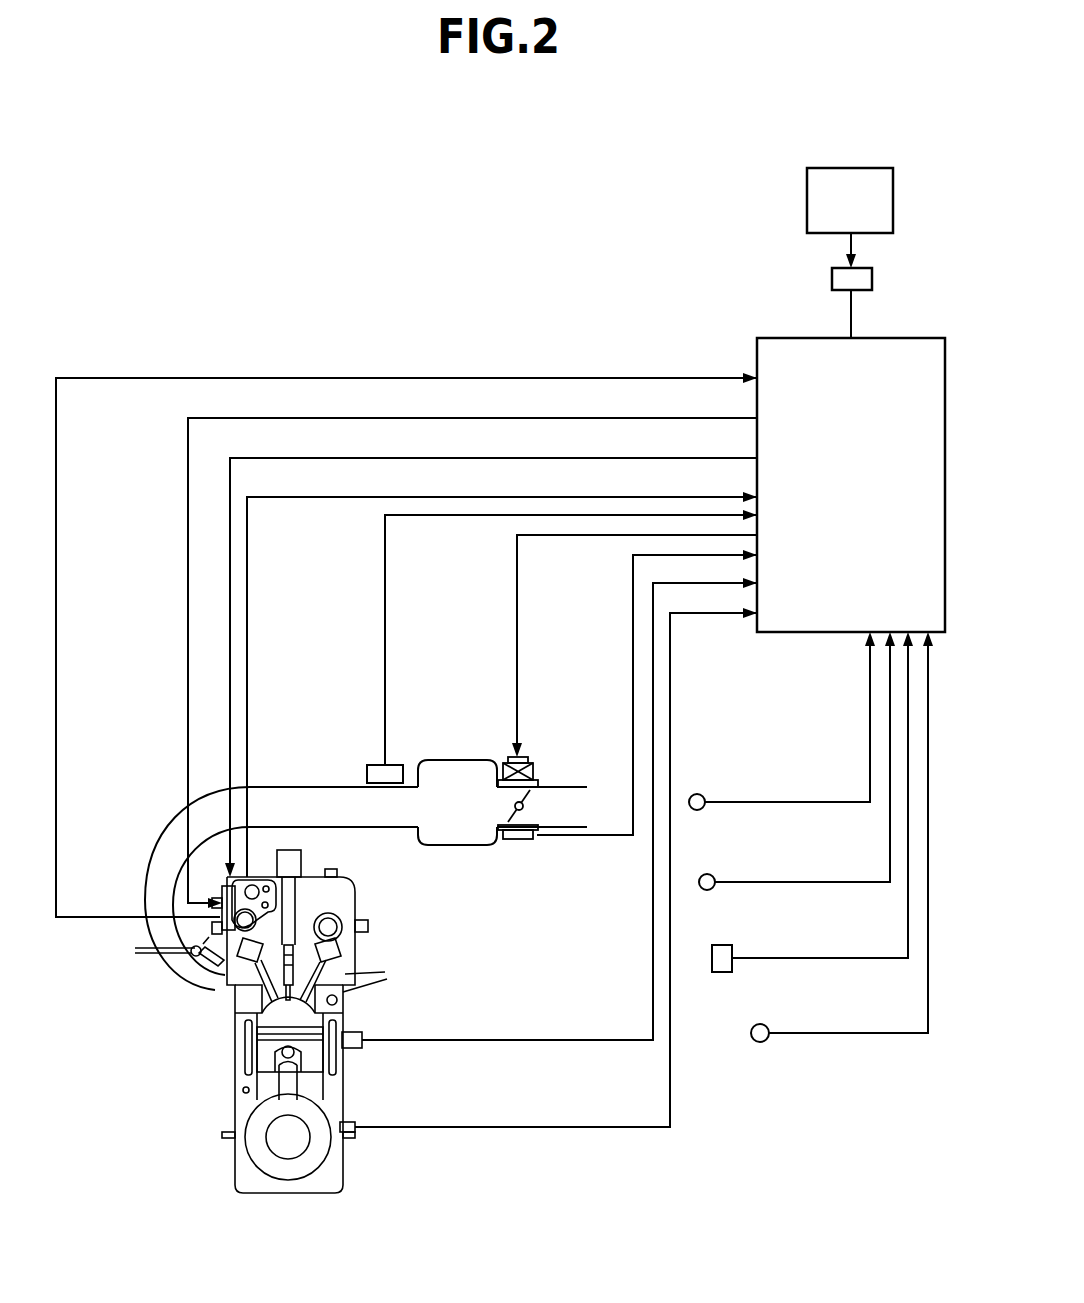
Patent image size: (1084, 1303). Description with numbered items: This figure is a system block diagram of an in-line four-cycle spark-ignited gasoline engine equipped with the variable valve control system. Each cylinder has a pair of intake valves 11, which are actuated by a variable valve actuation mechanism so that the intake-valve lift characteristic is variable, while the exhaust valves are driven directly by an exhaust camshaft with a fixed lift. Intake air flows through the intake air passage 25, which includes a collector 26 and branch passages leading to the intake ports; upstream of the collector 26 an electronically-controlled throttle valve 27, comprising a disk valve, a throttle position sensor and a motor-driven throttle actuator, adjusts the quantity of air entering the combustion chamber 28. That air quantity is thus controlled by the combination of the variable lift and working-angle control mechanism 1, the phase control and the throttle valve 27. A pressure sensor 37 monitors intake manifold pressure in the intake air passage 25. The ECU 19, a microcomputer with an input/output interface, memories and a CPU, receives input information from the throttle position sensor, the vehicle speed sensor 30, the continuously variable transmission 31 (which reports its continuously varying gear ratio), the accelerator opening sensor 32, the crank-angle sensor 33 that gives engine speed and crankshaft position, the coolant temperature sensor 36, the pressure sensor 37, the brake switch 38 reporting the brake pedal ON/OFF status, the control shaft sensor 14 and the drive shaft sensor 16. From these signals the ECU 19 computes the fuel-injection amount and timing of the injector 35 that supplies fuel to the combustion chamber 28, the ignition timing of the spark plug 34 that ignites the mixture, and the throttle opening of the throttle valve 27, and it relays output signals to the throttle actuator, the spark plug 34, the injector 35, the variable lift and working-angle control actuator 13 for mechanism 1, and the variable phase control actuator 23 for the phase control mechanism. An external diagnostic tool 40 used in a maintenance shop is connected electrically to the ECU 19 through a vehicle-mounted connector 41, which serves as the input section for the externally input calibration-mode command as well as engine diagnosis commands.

The variable lift and working-angle control mechanism 1 is at (268, 866).
The intake valves 11 is at (233, 990).
The variable lift and working-angle control actuator 13 is at (226, 885).
The control shaft sensor 14 is at (250, 877).
The drive shaft sensor 16 is at (212, 928).
The ECU 19 is at (790, 338).
The variable phase control actuator 23 is at (212, 903).
The intake air passage 25 is at (374, 827).
The collector 26 is at (470, 846).
The electronically-controlled throttle valve 27 is at (545, 752).
The combustion chamber 28 is at (280, 1012).
The vehicle speed sensor 30 is at (707, 874).
The continuously variable transmission 31 is at (720, 945).
The accelerator opening sensor 32 is at (757, 1042).
The crank-angle sensor 33 is at (355, 1122).
The spark plug 34 is at (388, 972).
The injector 35 is at (208, 962).
The coolant temperature sensor 36 is at (362, 1032).
The pressure sensor 37 is at (400, 765).
The brake switch 38 is at (697, 794).
The external diagnostic tool 40 is at (868, 169).
The connector 41 is at (873, 278).